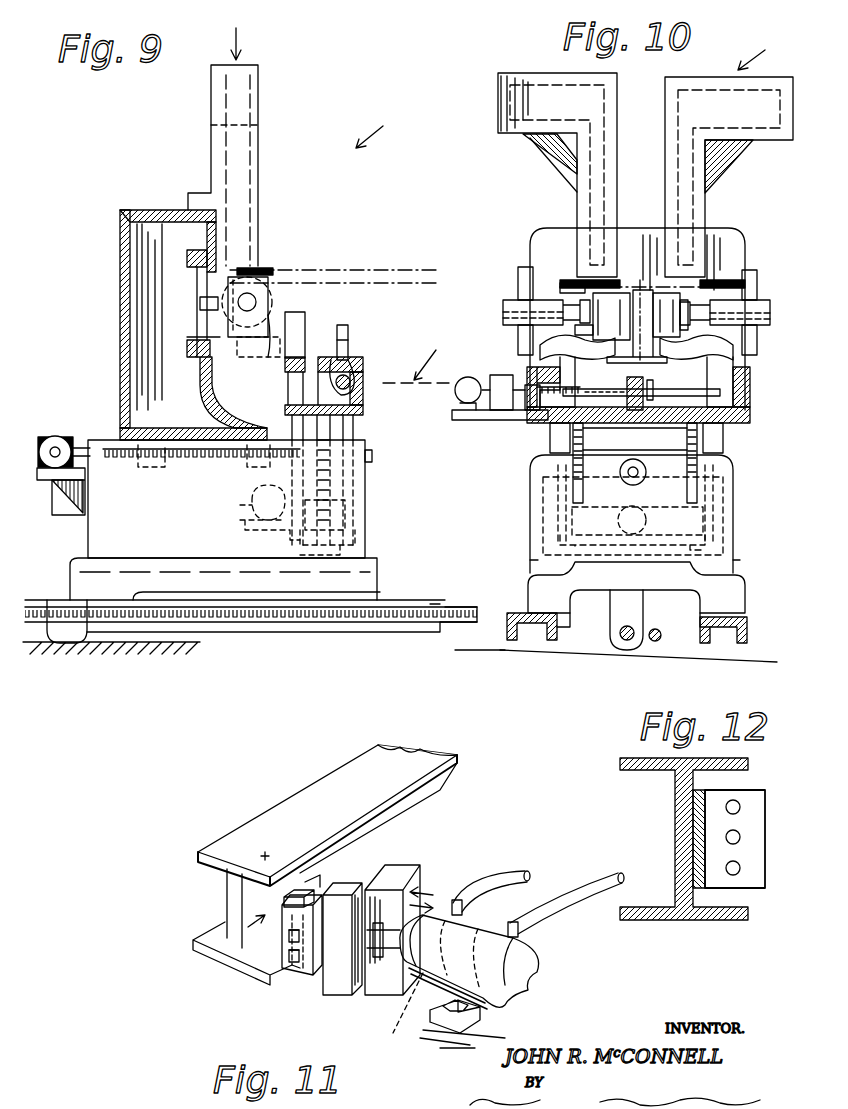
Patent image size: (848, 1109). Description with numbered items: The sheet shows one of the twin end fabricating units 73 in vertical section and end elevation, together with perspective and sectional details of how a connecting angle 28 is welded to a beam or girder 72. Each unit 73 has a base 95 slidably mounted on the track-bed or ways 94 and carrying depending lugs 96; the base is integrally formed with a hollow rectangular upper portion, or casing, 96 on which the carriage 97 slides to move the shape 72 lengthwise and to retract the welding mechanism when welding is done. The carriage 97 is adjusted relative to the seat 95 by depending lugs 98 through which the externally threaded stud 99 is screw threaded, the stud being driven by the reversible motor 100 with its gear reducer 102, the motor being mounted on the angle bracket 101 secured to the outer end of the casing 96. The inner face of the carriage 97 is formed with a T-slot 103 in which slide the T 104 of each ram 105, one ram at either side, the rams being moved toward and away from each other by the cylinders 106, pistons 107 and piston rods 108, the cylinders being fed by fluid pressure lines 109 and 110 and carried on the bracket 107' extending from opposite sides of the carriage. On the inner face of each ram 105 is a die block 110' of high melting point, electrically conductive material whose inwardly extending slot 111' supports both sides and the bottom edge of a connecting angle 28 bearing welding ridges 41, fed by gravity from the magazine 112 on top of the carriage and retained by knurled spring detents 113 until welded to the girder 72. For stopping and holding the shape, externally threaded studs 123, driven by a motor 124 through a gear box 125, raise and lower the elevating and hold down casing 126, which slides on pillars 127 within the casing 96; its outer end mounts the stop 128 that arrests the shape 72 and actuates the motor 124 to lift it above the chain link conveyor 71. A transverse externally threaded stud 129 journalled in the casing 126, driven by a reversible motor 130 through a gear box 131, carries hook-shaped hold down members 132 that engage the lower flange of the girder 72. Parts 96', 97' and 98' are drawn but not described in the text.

In FIG. 9, the connecting angle 28 is at (243, 337).
In FIG. 10, the connecting angle 28 is at (665, 290).
In FIG. 11, the connecting angle 28 is at (285, 905).
In FIG. 12, the connecting angle 28 is at (755, 872).
In FIG. 11, the welding ridges 41 is at (275, 963).
In FIG. 9, the chain link conveyor 71 is at (417, 355).
In FIG. 9, the beam or girder 72 is at (400, 270).
In FIG. 10, the beam or girder 72 is at (628, 285).
In FIG. 11, the beam or girder 72 is at (300, 803).
In FIG. 12, the beam or girder 72 is at (675, 798).
In FIG. 9, the end fabricating unit 73 is at (382, 123).
In FIG. 10, the end fabricating unit 73 is at (765, 50).
In FIG. 9, the track-bed or ways 94 is at (55, 600).
In FIG. 10, the track-bed or ways 94 is at (518, 613).
In FIG. 9, the base 95 is at (238, 586).
In FIG. 10, the base 95 is at (654, 585).
In FIG. 9, the hollow rectangular upper portion (casing) 96 is at (264, 599).
In FIG. 10, the hollow rectangular upper portion (casing) 96 is at (654, 563).
In FIG. 10, the rail lug 96' is at (610, 620).
In FIG. 9, the carriage 97 is at (162, 325).
In FIG. 10, the carriage 97 is at (668, 314).
In FIG. 9, the pin 97' is at (449, 582).
In FIG. 10, the pin 97' is at (552, 619).
In FIG. 9, the depending lugs 98 is at (226, 475).
In FIG. 10, the depending lugs 98 is at (631, 514).
In FIG. 9, the guide blocks 98' is at (204, 473).
In FIG. 9, the externally threaded stud 99 is at (372, 456).
In FIG. 10, the externally threaded stud 99 is at (622, 475).
In FIG. 9, the reversible constant speed motor 100 is at (62, 436).
In FIG. 9, the angle bracket 101 is at (40, 482).
In FIG. 9, the gear reducer 102 is at (35, 465).
In FIG. 10, the gear reducer 102 is at (580, 311).
In FIG. 9, the T-slot 103 is at (197, 267).
In FIG. 10, the T-slot 103 is at (570, 283).
In FIG. 9, the T 104 is at (200, 310).
In FIG. 11, the T 104 is at (337, 993).
In FIG. 9, the ram 105 is at (268, 357).
In FIG. 10, the ram 105 is at (605, 290).
In FIG. 11, the ram 105 is at (415, 870).
In FIG. 9, the cylinder 106 is at (262, 295).
In FIG. 10, the cylinder 106 is at (510, 300).
In FIG. 11, the cylinder 106 is at (462, 925).
In FIG. 11, the piston 107 is at (446, 1015).
In FIG. 10, the bracket 107' is at (509, 367).
In FIG. 9, the piston rod 108 is at (250, 280).
In FIG. 11, the fluid pressure line 109 is at (510, 872).
In FIG. 10, the fluid pressure line 110 is at (559, 434).
In FIG. 11, the fluid pressure line 110 is at (567, 891).
In FIG. 10, the die block 110' is at (722, 259).
In FIG. 11, the die block 110' is at (337, 839).
In FIG. 11, the slot 111' is at (299, 865).
In FIG. 9, the magazine 112 is at (248, 148).
In FIG. 10, the magazine 112 is at (668, 130).
In FIG. 11, the knurled spring detents 113 is at (297, 975).
In FIG. 9, the externally threaded stud 123 is at (348, 498).
In FIG. 10, the externally threaded stud 123 is at (590, 432).
In FIG. 9, the motor 124 is at (250, 530).
In FIG. 10, the motor 124 is at (616, 518).
In FIG. 9, the gear box 125 is at (355, 525).
In FIG. 10, the gear box 125 is at (700, 517).
In FIG. 9, the elevating and hold down casing 126 is at (363, 412).
In FIG. 10, the elevating and hold down casing 126 is at (750, 412).
In FIG. 10, the pillars 127 is at (725, 438).
In FIG. 9, the stop 128 is at (297, 325).
In FIG. 9, the transverse externally threaded stud 129 is at (352, 360).
In FIG. 10, the motor 130 is at (466, 405).
In FIG. 10, the gear box 131 is at (500, 412).
In FIG. 10, the hold down members 132 is at (770, 355).